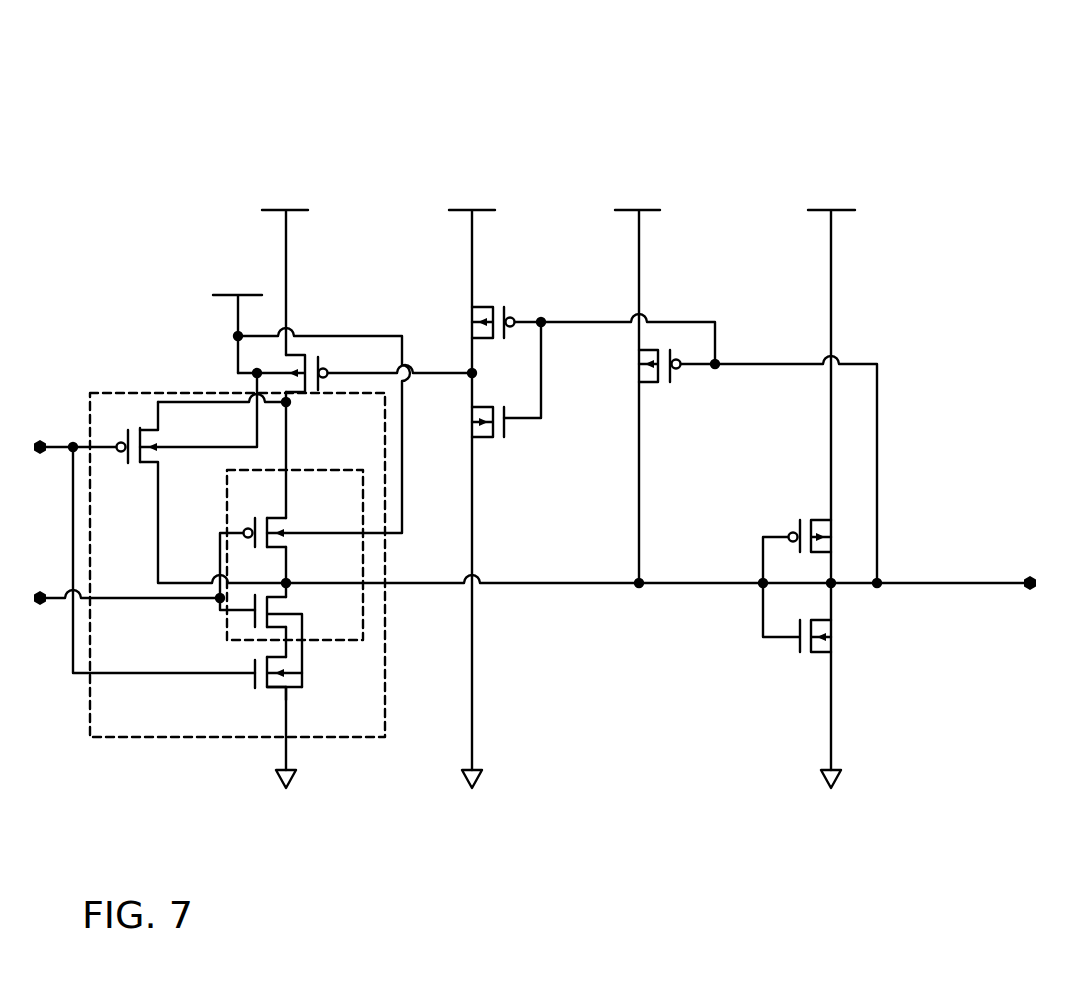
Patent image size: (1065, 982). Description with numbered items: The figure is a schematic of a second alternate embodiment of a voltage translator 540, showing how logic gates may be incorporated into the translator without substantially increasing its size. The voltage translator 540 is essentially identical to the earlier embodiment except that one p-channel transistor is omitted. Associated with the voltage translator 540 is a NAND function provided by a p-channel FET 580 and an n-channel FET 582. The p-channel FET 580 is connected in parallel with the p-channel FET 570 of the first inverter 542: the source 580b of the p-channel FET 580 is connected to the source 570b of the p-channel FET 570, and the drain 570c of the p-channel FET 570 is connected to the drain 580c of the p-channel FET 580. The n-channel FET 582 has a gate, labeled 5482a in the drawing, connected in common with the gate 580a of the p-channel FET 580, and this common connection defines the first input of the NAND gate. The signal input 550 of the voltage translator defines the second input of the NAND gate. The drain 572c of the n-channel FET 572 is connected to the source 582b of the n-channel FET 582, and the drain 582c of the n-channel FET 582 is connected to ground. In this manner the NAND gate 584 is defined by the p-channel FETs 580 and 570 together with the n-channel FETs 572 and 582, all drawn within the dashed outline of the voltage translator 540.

The voltage translator 540 is at (857, 79).
The NAND gate 584 is at (152, 392).
The first inverter 542 is at (223, 496).
The p-channel FET 580 is at (161, 446).
The gate of p-channel FET 580 580a is at (108, 452).
The source of p-channel FET 580 580b is at (152, 430).
The drain of p-channel FET 580 580c is at (157, 478).
The p-channel FET 570 is at (291, 524).
The source of p-channel FET 570 570b is at (276, 519).
The drain of p-channel FET 570 570c is at (276, 560).
The signal input 550 is at (215, 602).
The n-channel FET 572 is at (288, 612).
The drain of n-channel FET 572 572c is at (276, 629).
The n-channel FET 582 is at (313, 668).
The source of n-channel FET 582 582b is at (268, 656).
The drain of n-channel FET 582 582c is at (284, 690).
The gate of transistor 582 5482a is at (174, 674).